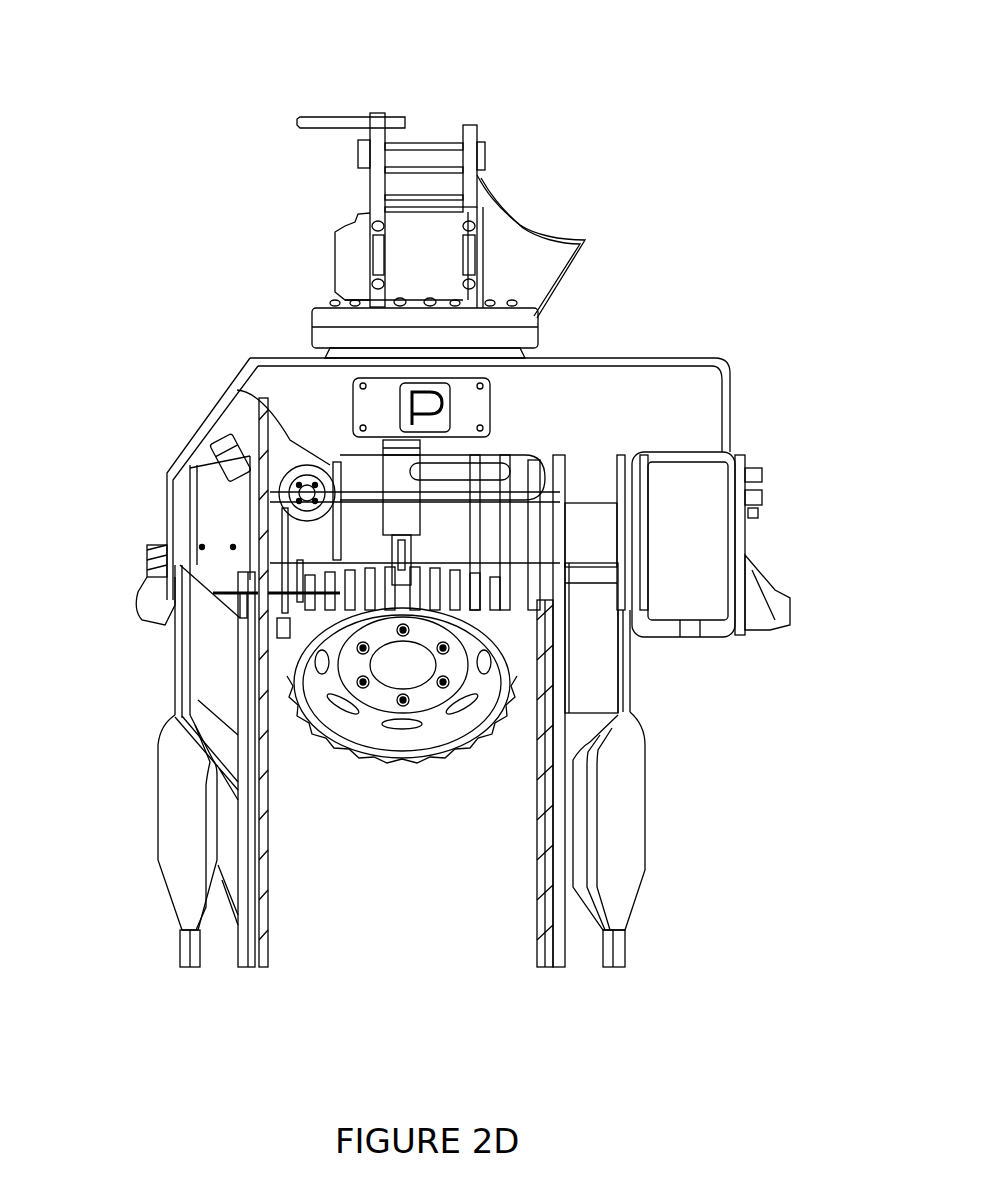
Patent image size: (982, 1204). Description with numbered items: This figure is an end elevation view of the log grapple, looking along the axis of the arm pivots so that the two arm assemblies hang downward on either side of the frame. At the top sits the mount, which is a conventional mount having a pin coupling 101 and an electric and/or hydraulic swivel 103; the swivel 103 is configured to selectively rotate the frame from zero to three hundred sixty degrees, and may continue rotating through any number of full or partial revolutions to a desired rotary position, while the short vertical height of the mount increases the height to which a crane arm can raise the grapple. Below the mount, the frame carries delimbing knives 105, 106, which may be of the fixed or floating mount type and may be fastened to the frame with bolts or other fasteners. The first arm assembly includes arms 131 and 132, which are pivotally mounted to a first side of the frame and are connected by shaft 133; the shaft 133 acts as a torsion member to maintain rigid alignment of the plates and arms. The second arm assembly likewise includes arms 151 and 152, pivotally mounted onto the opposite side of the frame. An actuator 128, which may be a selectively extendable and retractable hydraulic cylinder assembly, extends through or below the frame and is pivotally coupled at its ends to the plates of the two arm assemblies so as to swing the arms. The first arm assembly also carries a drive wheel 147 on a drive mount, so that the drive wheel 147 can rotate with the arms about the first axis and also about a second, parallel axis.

The pin coupling 101 is at (425, 160).
The swivel 103 is at (556, 322).
The delimbing knife 105 is at (130, 605).
The delimbing knife 106 is at (783, 607).
The actuator 128 is at (285, 458).
The arm 131 is at (173, 668).
The arm 132 is at (587, 693).
The shaft 133 is at (596, 520).
The drive wheel 147 is at (374, 762).
The arm 151 is at (173, 807).
The arm 152 is at (628, 810).